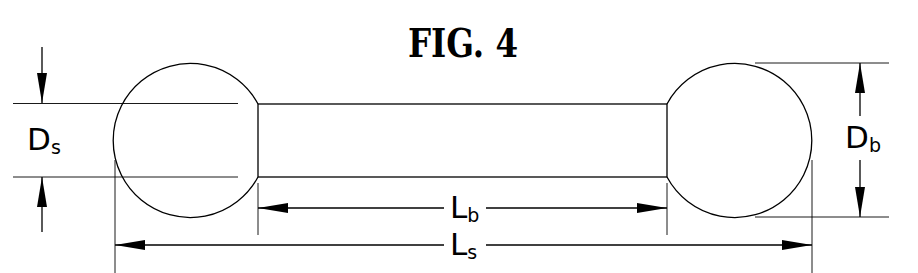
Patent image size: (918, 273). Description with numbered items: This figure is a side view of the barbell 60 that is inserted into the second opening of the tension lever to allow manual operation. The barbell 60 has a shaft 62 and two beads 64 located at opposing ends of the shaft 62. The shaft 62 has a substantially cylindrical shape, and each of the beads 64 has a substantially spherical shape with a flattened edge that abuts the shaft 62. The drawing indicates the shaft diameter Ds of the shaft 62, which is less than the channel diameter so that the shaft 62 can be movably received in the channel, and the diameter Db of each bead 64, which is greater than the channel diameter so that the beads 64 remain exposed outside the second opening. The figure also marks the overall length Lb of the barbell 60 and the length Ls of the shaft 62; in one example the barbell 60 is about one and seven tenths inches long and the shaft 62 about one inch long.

The barbell 60 is at (248, 39).
The shaft 62 is at (508, 113).
The beads 64 is at (212, 90).